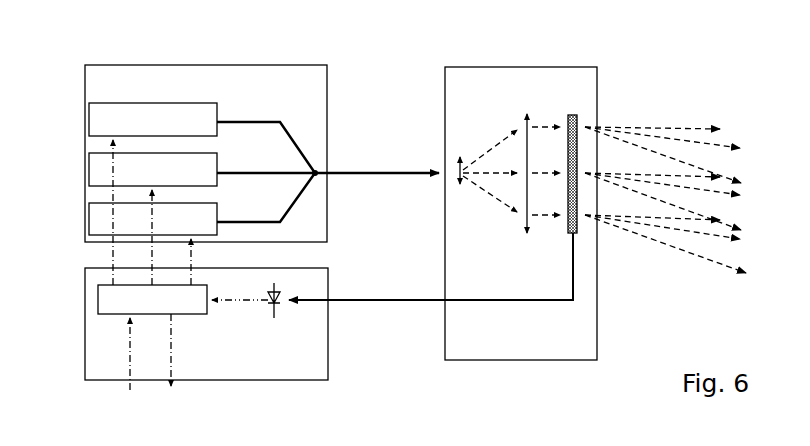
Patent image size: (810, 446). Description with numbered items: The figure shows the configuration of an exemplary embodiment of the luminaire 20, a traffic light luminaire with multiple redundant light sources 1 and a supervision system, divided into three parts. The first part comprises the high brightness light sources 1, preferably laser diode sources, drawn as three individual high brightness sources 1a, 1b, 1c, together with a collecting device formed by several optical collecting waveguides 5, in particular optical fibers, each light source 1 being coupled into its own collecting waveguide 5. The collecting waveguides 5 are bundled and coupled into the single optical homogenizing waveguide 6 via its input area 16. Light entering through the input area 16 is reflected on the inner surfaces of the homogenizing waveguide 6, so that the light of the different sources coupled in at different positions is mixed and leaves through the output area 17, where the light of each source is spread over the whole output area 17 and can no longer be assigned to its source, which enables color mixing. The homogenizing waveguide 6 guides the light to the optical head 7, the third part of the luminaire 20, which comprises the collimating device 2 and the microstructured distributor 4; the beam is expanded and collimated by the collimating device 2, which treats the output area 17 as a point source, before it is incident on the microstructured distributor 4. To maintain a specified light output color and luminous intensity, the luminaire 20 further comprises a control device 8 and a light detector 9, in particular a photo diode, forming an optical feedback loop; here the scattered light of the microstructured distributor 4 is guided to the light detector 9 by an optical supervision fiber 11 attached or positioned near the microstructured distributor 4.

The luminaire 20 is at (72, 69).
The light sources 1 is at (121, 169).
The high brightness source 1a is at (153, 119).
The high brightness source 1b is at (153, 169).
The high brightness source 1c is at (153, 219).
The optical collecting waveguides 5 is at (269, 222).
The input area 16 is at (318, 171).
The optical homogenizing waveguide 6 is at (383, 170).
The output area 17 is at (453, 165).
The collimating device 2 is at (532, 110).
The microstructured distributor 4 is at (573, 113).
The optical head 7 is at (505, 332).
The optical supervision fiber 11 is at (388, 302).
The light detector 9 is at (271, 298).
The control device 8 is at (99, 302).